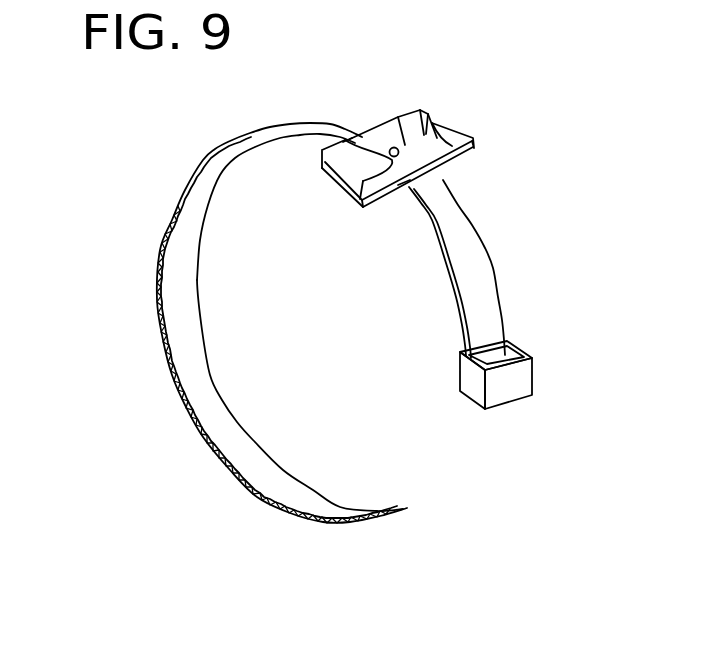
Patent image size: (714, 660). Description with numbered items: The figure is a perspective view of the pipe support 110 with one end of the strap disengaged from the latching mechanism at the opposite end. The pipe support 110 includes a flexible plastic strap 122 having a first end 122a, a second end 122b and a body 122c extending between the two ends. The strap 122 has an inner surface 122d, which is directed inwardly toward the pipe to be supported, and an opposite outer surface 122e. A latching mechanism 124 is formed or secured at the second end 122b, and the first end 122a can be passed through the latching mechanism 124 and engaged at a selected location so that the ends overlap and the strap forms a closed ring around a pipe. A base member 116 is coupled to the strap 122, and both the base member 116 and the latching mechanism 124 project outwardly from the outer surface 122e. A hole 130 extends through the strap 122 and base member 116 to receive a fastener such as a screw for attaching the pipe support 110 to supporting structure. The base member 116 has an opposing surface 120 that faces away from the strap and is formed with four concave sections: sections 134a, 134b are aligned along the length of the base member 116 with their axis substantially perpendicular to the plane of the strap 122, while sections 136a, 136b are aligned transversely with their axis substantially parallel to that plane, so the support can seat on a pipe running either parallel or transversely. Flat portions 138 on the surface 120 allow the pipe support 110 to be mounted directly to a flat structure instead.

The pipe support 110 is at (506, 238).
The base member 116 is at (463, 162).
The opposing surface 120 is at (427, 174).
The strap 122 is at (180, 195).
The first end 122a is at (313, 521).
The second end 122b is at (494, 336).
The body 122c is at (217, 172).
The inner surface 122d is at (198, 378).
The outer surface 122e is at (480, 290).
The latching mechanism 124 is at (514, 404).
The hole 130 is at (395, 147).
The concave section 134a is at (345, 172).
The concave section 134b is at (424, 133).
The concave section 136a is at (362, 142).
The concave section 136b is at (403, 185).
The flat portions 138 is at (367, 143).